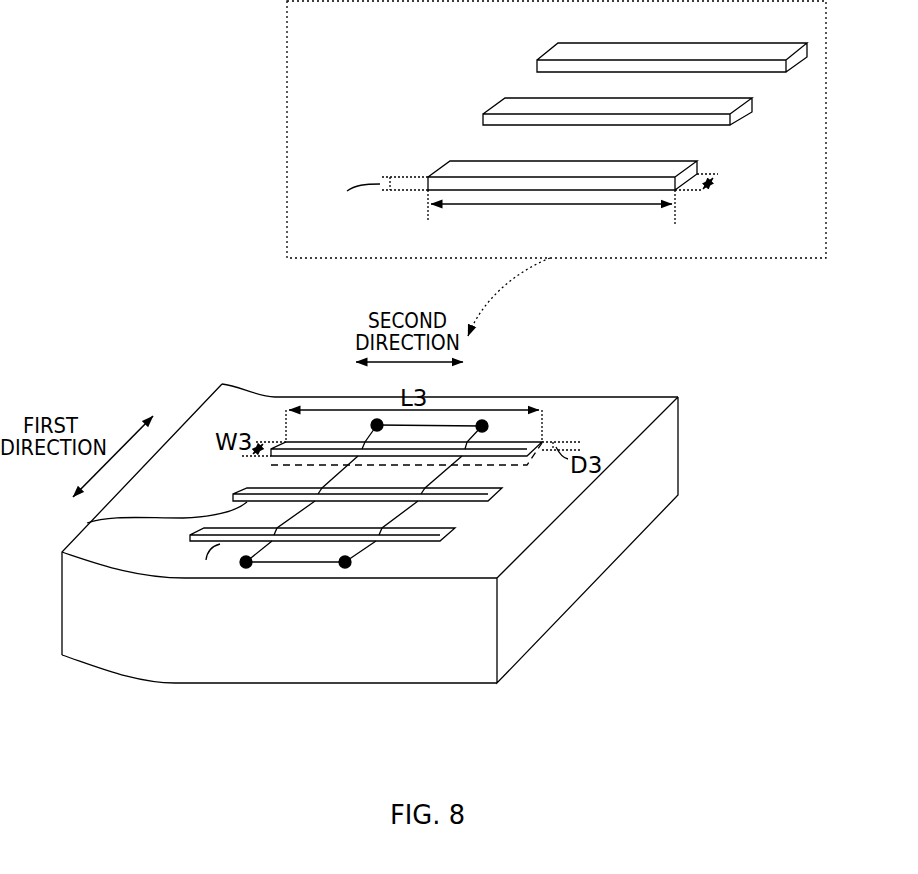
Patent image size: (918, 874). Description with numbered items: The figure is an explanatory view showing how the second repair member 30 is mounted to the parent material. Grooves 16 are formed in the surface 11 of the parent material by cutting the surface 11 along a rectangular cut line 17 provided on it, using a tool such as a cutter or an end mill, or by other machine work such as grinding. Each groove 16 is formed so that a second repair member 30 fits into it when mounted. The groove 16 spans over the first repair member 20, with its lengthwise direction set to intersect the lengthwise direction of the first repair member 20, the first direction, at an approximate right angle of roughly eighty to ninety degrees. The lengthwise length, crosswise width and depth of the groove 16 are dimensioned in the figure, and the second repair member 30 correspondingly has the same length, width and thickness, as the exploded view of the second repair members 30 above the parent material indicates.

The surface 11 is at (630, 408).
The groove 16 is at (518, 457).
The rectangular cut line 17 is at (87, 523).
The first repair member 20 is at (297, 572).
The second repair member 30 is at (528, 48).